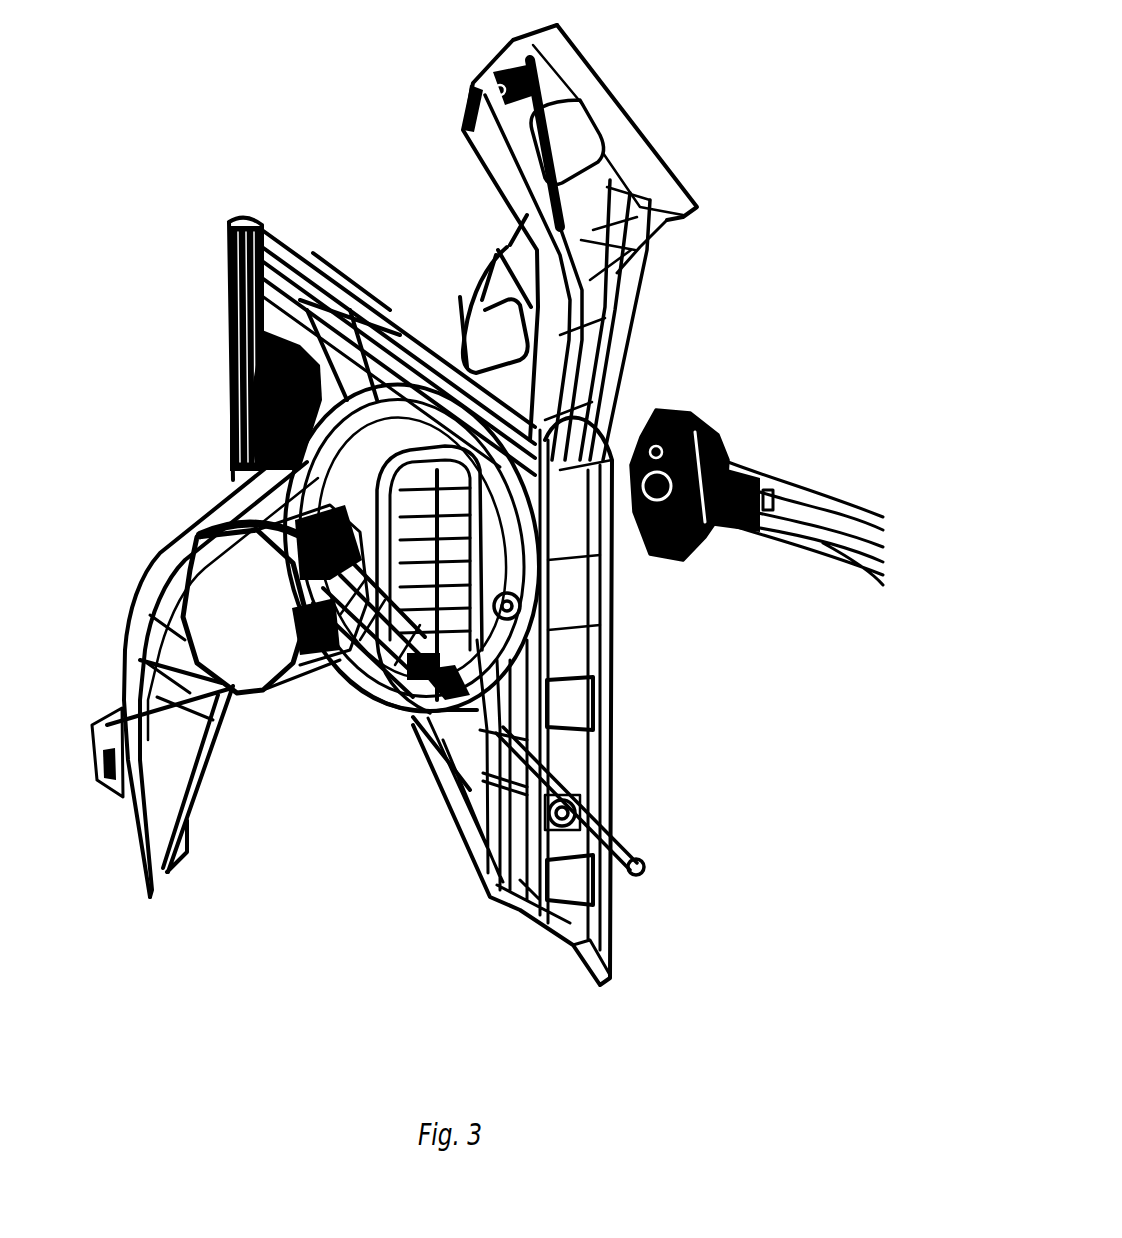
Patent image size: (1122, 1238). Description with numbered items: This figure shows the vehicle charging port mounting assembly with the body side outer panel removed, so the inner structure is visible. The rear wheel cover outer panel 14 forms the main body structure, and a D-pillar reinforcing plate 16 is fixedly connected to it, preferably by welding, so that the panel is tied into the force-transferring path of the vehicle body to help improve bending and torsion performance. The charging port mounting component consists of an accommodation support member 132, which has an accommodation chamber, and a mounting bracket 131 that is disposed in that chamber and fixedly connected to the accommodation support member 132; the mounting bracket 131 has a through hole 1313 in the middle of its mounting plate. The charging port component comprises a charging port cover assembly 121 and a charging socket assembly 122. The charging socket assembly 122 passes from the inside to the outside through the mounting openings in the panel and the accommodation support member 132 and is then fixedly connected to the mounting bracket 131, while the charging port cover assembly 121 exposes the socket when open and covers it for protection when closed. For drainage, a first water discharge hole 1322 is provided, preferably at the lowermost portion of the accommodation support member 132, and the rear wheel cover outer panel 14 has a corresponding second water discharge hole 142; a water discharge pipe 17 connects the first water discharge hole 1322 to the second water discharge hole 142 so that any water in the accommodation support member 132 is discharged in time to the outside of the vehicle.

The rear wheel cover outer panel 14 is at (282, 300).
The D-pillar reinforcing plate 16 is at (512, 172).
The accommodation support member 132 is at (353, 480).
The mounting bracket 131 is at (440, 513).
The charging port cover assembly 121 is at (247, 613).
The charging socket assembly 122 is at (708, 497).
The water discharge pipe 17 is at (595, 793).
The second water discharge hole 142 is at (560, 822).
The through hole 1313 is at (400, 577).
The first water discharge hole 1322 is at (432, 690).